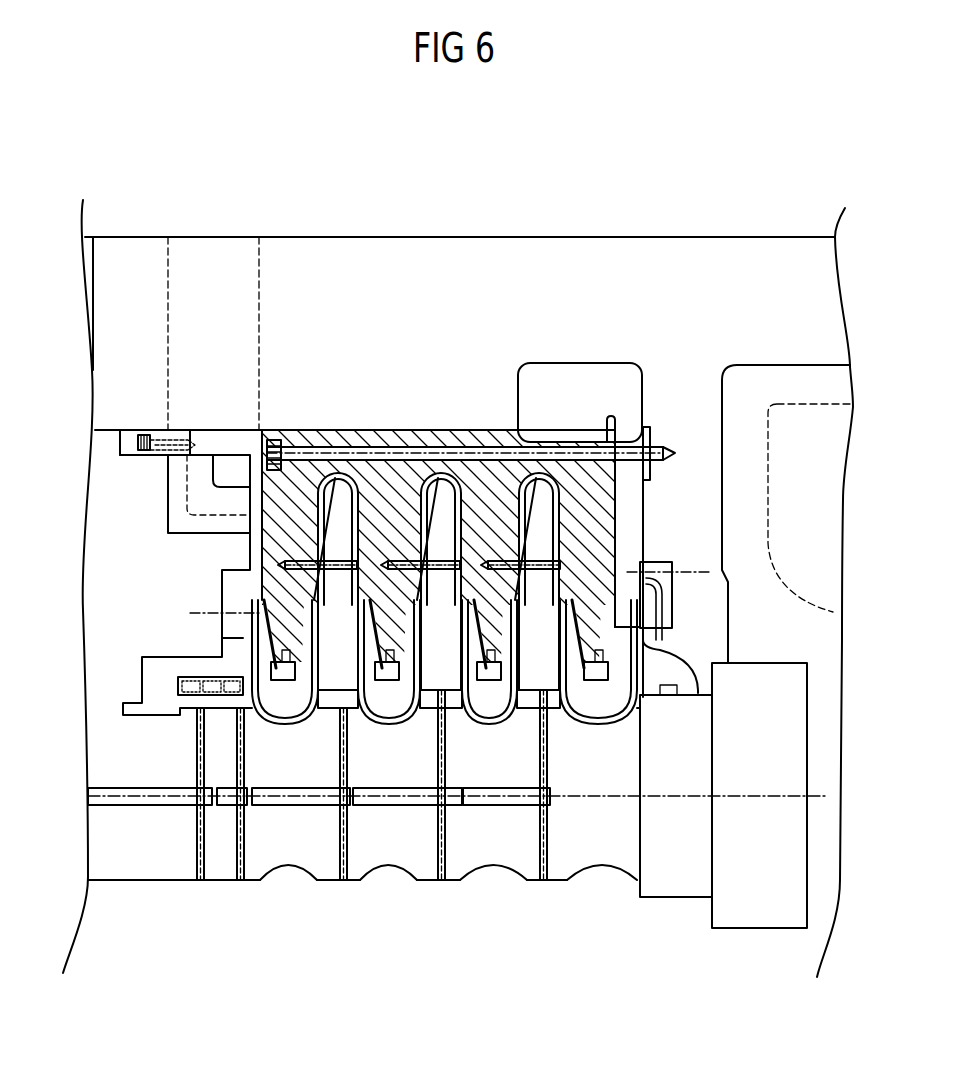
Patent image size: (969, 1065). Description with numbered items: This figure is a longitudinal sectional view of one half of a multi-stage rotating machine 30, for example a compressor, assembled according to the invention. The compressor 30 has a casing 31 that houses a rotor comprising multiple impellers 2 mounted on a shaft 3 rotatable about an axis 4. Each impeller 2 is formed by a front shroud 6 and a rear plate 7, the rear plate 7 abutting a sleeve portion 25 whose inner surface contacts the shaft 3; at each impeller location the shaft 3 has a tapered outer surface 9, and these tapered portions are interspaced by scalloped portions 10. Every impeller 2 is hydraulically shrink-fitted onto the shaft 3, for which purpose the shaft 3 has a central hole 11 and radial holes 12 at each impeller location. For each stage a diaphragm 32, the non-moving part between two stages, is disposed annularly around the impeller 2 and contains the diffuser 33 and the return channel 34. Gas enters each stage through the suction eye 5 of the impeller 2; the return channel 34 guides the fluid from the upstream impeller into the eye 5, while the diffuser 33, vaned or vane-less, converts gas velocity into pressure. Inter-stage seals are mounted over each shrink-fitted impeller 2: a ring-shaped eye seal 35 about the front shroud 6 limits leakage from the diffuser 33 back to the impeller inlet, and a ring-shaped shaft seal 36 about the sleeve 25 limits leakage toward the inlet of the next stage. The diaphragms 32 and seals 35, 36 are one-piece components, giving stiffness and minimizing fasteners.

The impeller 2 is at (596, 602).
The shaft 3 is at (123, 868).
The axis 4 is at (673, 797).
The suction eye 5 is at (260, 715).
The front shroud 6 is at (645, 563).
The rear plate 7 is at (640, 667).
The tapered outer surface 9 is at (327, 882).
The scalloped portion 10 is at (390, 870).
The central hole 11 is at (495, 797).
The radial hole 12 is at (547, 758).
The sleeve portion 25 is at (535, 710).
The rotating machine 30 is at (128, 193).
The casing 31 is at (120, 326).
The diaphragm 32 is at (308, 470).
The diffuser 33 is at (360, 540).
The return channel 34 is at (317, 630).
The eye seal 35 is at (650, 623).
The shaft seal 36 is at (513, 713).